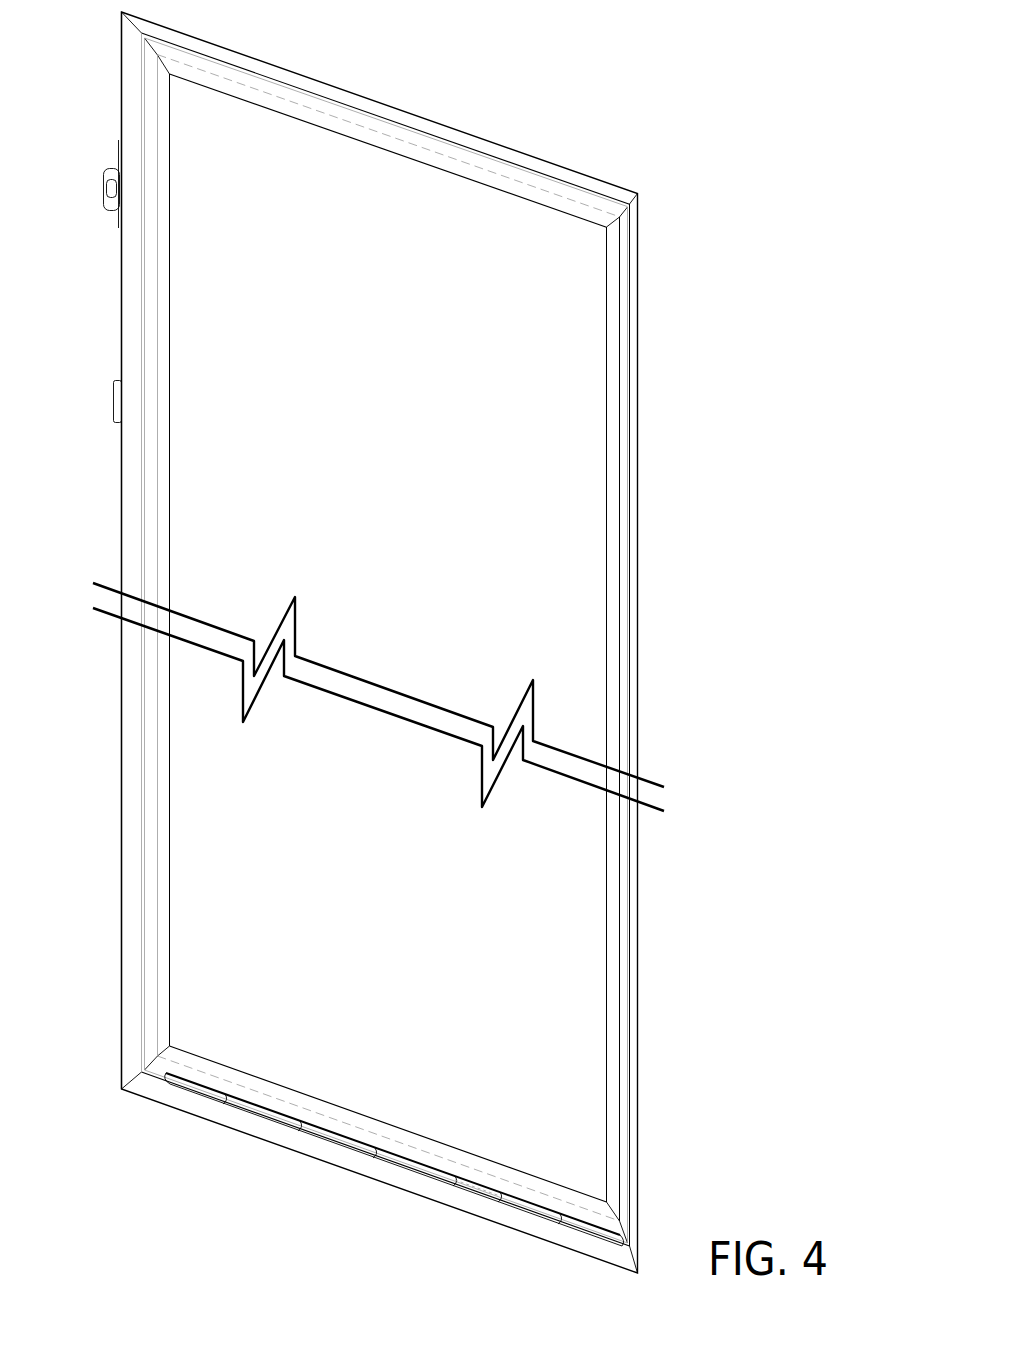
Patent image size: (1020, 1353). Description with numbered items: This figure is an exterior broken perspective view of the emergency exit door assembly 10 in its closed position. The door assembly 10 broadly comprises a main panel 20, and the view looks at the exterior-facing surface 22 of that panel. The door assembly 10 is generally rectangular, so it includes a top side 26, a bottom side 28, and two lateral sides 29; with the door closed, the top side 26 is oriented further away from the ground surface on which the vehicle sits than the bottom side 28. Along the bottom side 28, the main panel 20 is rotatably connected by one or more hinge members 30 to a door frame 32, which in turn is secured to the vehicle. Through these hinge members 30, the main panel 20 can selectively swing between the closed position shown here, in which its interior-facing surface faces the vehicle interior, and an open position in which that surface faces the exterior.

The door assembly 10 is at (395, 643).
The main panel 20 is at (377, 643).
The exterior-facing surface 22 is at (225, 783).
The top side 26 is at (440, 205).
The bottom side 28 is at (386, 1160).
The lateral sides 29 is at (178, 694).
The hinge members 30 is at (388, 1158).
The door frame 32 is at (128, 290).